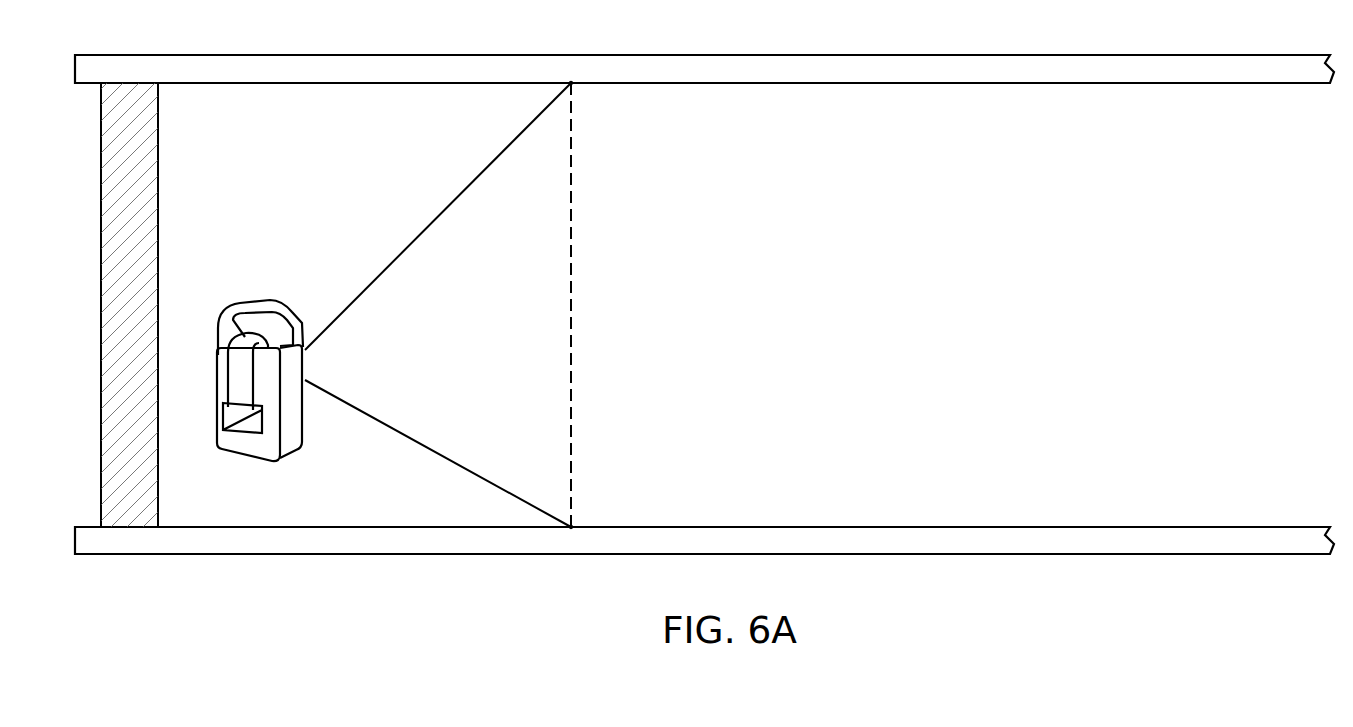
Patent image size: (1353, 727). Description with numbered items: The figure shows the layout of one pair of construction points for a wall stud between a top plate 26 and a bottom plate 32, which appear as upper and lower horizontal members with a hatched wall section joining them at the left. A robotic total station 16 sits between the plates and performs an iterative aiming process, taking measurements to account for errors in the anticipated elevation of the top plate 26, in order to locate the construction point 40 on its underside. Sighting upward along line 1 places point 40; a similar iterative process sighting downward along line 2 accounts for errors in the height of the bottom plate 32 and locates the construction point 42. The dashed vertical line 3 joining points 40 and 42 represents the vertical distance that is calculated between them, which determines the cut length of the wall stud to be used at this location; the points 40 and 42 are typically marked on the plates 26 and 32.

The top plate 26 is at (992, 74).
The bottom plate 32 is at (991, 537).
The robotic total station 16 is at (225, 456).
The first line of sight / beam 1 is at (438, 216).
The second line of sight / beam 2 is at (438, 453).
The reference span line 3 is at (581, 305).
The construction point 40 is at (572, 84).
The construction point 42 is at (573, 525).